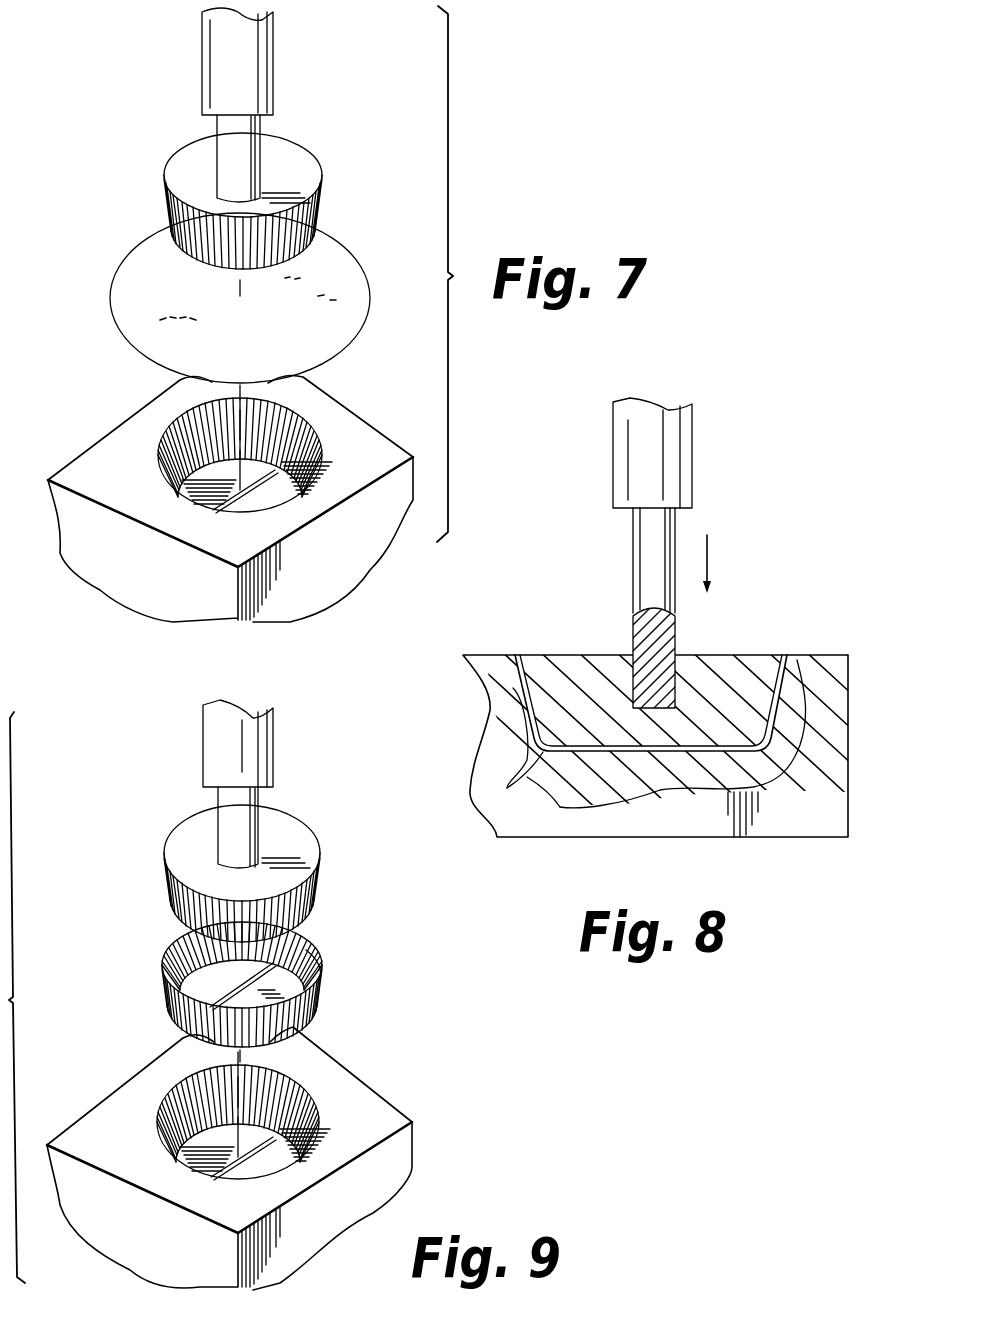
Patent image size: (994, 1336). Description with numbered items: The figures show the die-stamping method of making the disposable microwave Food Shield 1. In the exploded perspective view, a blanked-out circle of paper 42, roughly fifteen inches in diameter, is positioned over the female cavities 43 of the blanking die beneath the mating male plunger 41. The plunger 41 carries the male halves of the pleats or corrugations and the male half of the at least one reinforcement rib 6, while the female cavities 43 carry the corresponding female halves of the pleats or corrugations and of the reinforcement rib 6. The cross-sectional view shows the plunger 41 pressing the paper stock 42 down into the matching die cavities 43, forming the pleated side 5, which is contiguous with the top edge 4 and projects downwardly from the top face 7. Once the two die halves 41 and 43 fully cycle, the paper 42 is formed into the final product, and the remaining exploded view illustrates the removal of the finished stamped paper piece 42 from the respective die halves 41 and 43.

In FIG. 7, the male plunger 41 is at (302, 100).
In FIG. 8, the male plunger 41 is at (703, 460).
In FIG. 9, the male plunger 41 is at (297, 788).
In FIG. 7, the paper 42 is at (110, 263).
In FIG. 7, the female cavities 43 is at (163, 432).
In FIG. 8, the female cavities 43 is at (762, 690).
In FIG. 9, the female cavities 43 is at (160, 1097).
In FIG. 8, the Food Shield 1 is at (662, 752).
In FIG. 9, the Food Shield 1 is at (325, 957).
In FIG. 8, the top edge 4 is at (507, 788).
In FIG. 8, the side 5 is at (533, 678).
In FIG. 9, the side 5 is at (318, 992).
In FIG. 9, the reinforcement rib 6 is at (187, 930).
In FIG. 8, the top face 7 is at (560, 807).